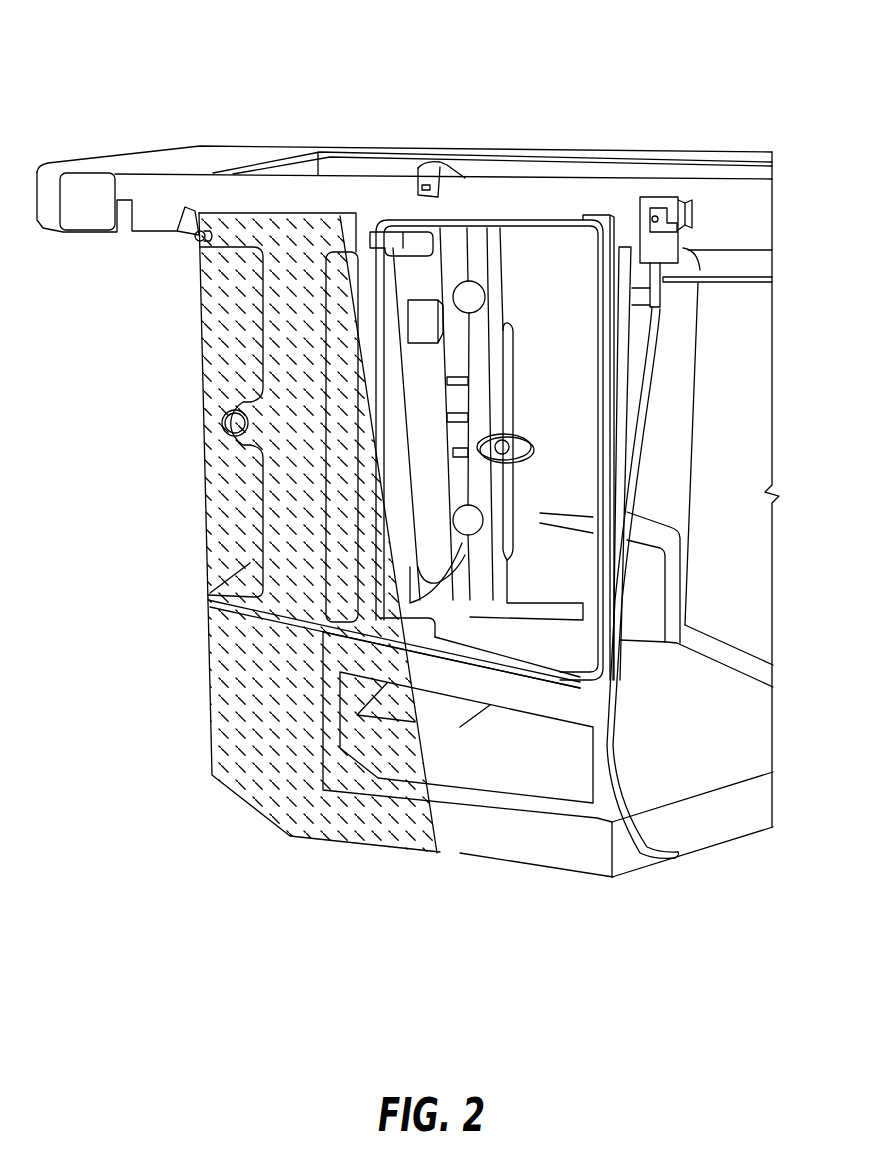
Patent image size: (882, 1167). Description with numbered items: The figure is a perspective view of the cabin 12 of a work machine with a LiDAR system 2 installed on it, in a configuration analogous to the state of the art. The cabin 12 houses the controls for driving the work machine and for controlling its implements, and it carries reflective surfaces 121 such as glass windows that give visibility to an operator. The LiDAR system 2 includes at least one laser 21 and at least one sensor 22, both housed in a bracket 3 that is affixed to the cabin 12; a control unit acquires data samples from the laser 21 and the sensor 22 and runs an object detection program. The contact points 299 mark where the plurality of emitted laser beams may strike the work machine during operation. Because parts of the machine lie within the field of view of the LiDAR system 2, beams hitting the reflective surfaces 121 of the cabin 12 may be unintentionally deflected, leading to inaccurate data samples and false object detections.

The cabin 12 is at (109, 59).
The LiDAR system 2 is at (667, 147).
The laser 21 is at (690, 200).
The sensor 22 is at (690, 210).
The bracket 3 is at (692, 222).
The reflective surfaces 121 is at (535, 242).
The contact points 299 is at (237, 522).